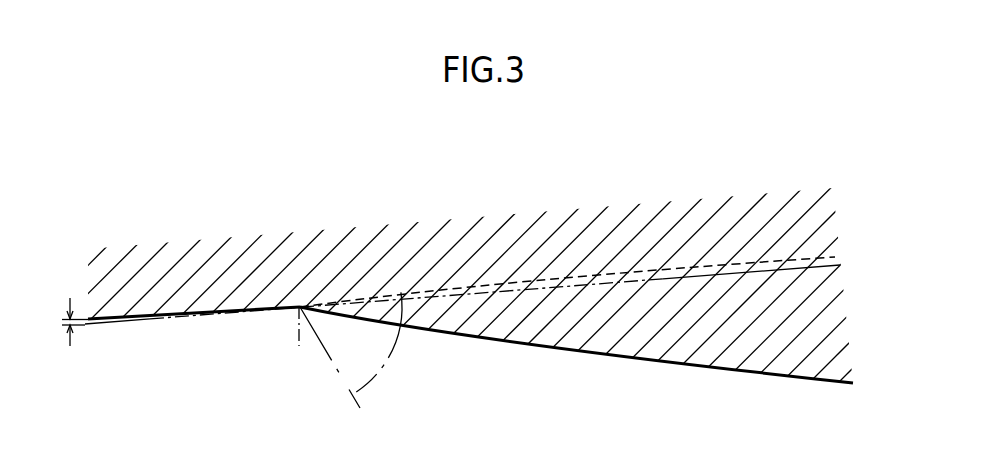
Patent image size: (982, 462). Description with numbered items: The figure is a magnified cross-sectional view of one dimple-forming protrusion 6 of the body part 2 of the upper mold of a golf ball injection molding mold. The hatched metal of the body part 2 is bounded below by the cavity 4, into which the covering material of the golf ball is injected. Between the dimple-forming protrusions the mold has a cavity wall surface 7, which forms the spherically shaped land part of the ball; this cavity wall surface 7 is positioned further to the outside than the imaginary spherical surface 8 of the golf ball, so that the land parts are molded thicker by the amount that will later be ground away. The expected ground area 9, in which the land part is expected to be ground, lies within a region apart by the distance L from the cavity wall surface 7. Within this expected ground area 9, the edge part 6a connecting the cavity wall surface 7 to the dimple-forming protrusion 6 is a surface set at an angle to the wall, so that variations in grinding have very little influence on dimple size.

The body part of upper mold 2 is at (546, 258).
The cavity 4 is at (551, 400).
The dimple-forming protrusion 6 is at (767, 297).
The edge part 6a is at (301, 306).
The cavity wall surface 7 is at (213, 311).
The imaginary spherical surface 8 is at (678, 275).
The expected ground area 9 is at (143, 316).
The distance L is at (60, 347).